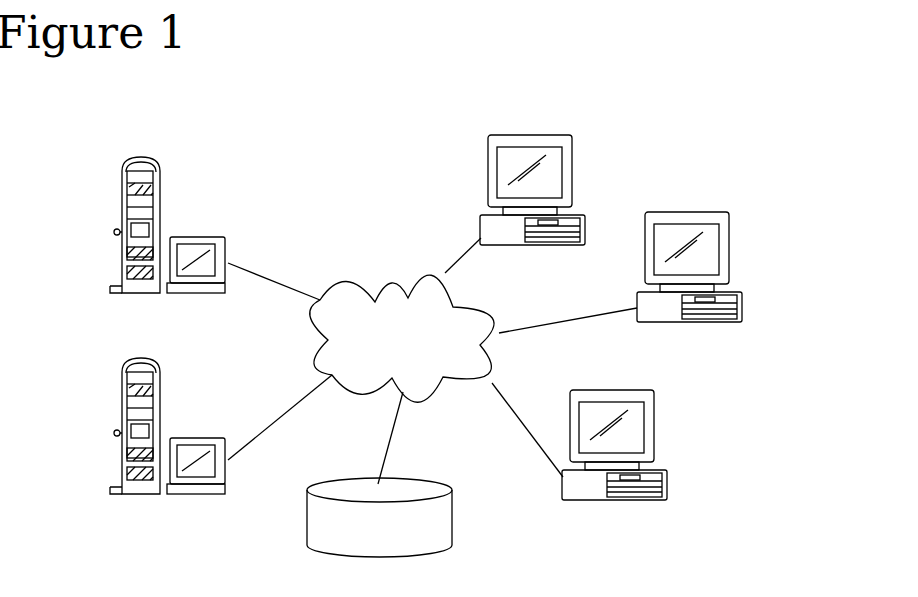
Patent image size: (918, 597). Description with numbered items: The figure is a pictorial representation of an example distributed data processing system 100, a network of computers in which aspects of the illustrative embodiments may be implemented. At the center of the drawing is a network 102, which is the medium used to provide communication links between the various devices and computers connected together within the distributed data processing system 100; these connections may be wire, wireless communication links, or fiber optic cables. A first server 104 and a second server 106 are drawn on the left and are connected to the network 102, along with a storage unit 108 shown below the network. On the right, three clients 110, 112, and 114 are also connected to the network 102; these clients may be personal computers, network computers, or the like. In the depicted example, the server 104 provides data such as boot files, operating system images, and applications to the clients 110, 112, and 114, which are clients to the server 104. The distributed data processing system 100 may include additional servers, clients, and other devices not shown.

The distributed data processing system 100 is at (345, 195).
The network 102 is at (429, 373).
The server 104 is at (160, 177).
The server 106 is at (160, 378).
The storage unit 108 is at (453, 515).
The client 110 is at (573, 183).
The client 112 is at (730, 250).
The client 114 is at (655, 432).